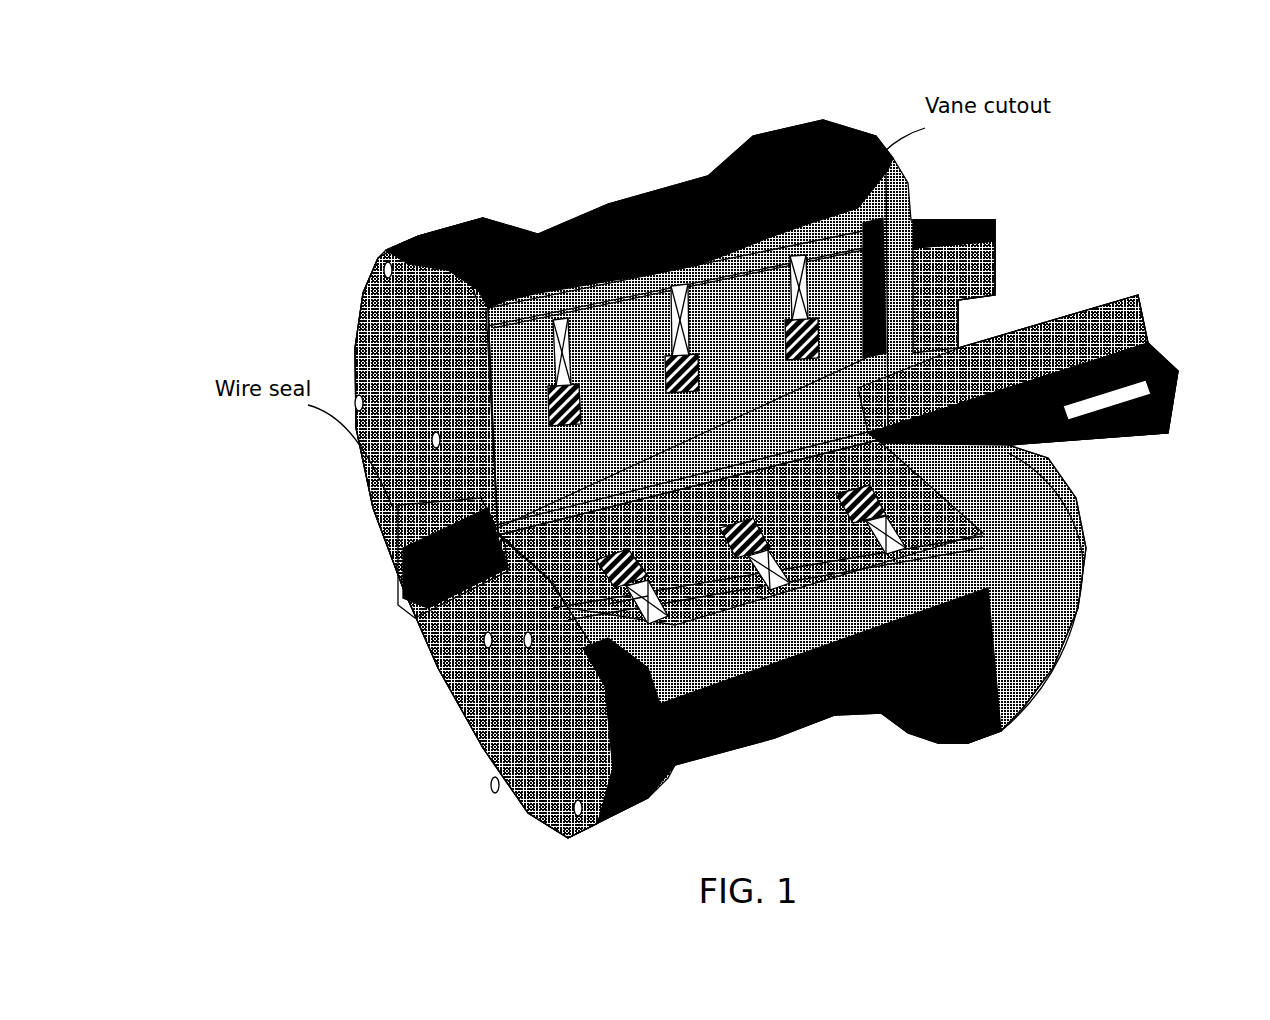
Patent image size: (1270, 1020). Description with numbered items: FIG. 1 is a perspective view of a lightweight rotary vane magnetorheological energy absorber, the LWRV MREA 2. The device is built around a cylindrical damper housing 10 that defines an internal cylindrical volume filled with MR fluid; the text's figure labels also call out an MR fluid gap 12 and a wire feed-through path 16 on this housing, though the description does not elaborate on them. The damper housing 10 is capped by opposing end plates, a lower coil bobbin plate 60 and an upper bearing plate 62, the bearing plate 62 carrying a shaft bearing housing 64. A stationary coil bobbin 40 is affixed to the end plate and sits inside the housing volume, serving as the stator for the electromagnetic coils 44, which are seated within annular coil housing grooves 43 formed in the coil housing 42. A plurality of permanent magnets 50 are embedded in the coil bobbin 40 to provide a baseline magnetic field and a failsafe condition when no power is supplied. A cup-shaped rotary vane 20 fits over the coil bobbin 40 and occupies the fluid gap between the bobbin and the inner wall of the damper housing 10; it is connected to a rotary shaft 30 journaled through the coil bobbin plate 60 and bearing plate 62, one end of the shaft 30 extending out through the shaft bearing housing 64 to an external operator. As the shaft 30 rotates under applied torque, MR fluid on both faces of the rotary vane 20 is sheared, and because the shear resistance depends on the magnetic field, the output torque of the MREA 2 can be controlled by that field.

The lightweight rotary vane magnetorheological energy absorber 2 is at (230, 86).
The cylindrical damper housing 10 is at (600, 230).
The MR fluid gap 12 is at (473, 287).
The wire feed-through path 16 is at (560, 590).
The cup-shaped rotary vane 20 is at (753, 250).
The rotary shaft 30 is at (1057, 333).
The coil bobbin 40 is at (1020, 630).
The coil housing 42 is at (697, 567).
The coil housing grooves 43 is at (633, 580).
The electromagnetic coils 44 is at (717, 437).
The permanent magnets 50 is at (760, 565).
The coil bobbin plate 60 is at (393, 359).
The bearing plate 62 is at (1040, 543).
The shaft bearing housing 64 is at (980, 223).